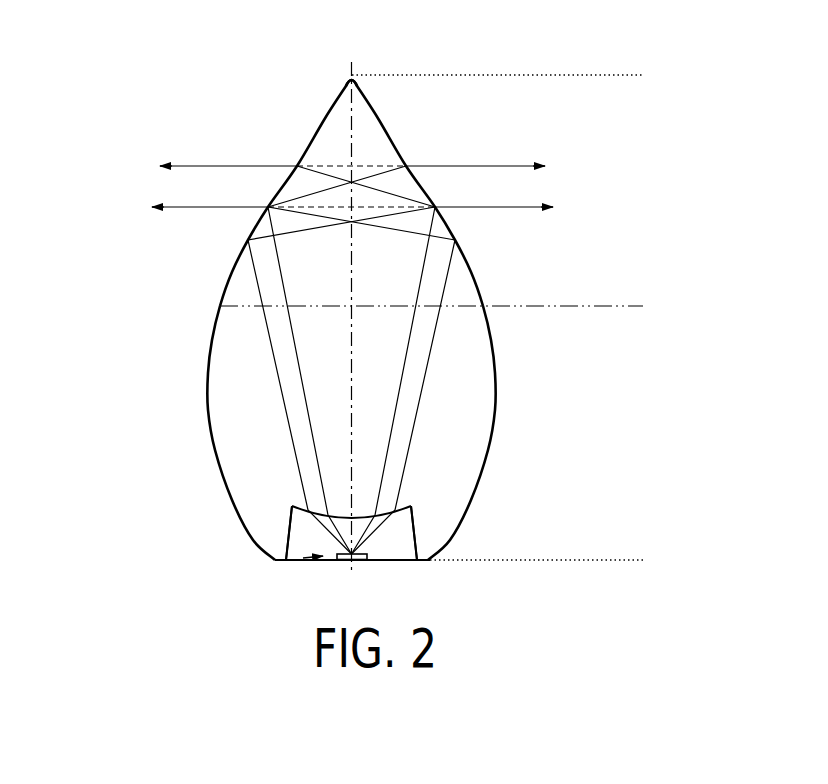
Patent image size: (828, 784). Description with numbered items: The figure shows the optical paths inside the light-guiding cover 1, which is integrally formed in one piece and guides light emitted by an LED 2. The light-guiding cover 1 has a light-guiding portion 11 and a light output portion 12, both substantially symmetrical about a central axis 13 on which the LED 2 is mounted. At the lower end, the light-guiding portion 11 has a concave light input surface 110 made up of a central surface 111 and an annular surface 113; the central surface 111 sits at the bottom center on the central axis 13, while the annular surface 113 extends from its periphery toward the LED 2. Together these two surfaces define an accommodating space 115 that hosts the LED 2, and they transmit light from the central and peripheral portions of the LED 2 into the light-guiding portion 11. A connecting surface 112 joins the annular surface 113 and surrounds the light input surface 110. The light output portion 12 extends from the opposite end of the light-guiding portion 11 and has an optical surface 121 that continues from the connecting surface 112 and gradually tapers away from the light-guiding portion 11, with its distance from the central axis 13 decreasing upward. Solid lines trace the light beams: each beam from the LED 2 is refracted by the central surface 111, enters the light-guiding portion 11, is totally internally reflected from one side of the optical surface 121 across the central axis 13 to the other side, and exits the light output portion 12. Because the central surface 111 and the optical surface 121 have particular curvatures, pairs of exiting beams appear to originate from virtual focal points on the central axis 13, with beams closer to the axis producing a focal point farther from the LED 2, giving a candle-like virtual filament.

The light-guiding cover 1 is at (190, 100).
The LED 2 is at (297, 563).
The light-guiding portion 11 is at (616, 306).
The light output portion 12 is at (616, 75).
The central axis 13 is at (352, 117).
The light input surface 110 is at (182, 495).
The central surface 111 is at (296, 513).
The connecting surface 112 is at (495, 400).
The annular surface 113 is at (288, 541).
The accommodating space 115 is at (390, 548).
The optical surface 121 is at (480, 273).